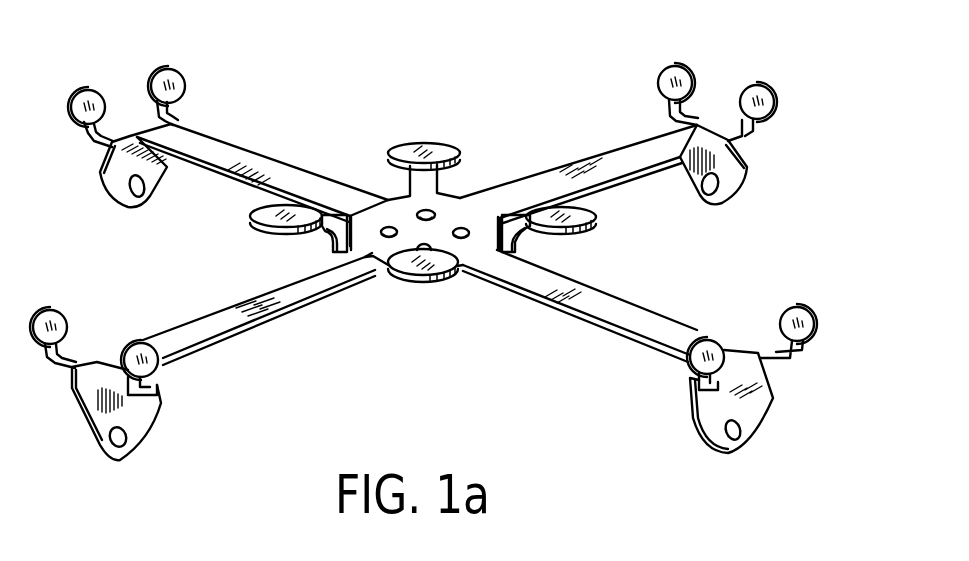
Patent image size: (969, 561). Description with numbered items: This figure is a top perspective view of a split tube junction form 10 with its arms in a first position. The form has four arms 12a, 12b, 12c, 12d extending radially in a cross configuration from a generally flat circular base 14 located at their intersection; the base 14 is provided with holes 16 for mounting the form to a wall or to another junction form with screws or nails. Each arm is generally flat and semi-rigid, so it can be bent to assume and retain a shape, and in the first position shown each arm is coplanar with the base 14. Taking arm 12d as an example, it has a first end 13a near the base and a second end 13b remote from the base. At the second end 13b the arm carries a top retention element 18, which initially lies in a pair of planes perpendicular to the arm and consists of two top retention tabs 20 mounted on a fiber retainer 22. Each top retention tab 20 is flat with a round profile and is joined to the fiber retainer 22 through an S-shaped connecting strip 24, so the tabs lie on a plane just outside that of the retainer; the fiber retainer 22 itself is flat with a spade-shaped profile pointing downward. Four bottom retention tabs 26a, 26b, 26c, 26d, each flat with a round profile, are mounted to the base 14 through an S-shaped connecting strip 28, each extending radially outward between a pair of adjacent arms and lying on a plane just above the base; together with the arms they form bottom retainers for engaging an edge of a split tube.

The split tube junction form 10 is at (534, 97).
The arm 12a is at (276, 178).
The arm 12b is at (222, 328).
The arm 12c is at (612, 157).
The arm 12d is at (603, 312).
The first end 13a is at (517, 272).
The second end 13b is at (690, 337).
The circular base 14 is at (373, 257).
The holes 16 is at (460, 227).
The top retention element 18 is at (770, 447).
The top retention tab 20 is at (688, 337).
The fiber retainer 22 is at (718, 428).
The S-shaped connecting strip 24 is at (703, 384).
The bottom retention tab 26a is at (253, 208).
The bottom retention tab 26b is at (437, 270).
The bottom retention tab 26c is at (424, 147).
The bottom retention tab 26d is at (600, 211).
The S-shaped connecting strip 28 is at (328, 242).